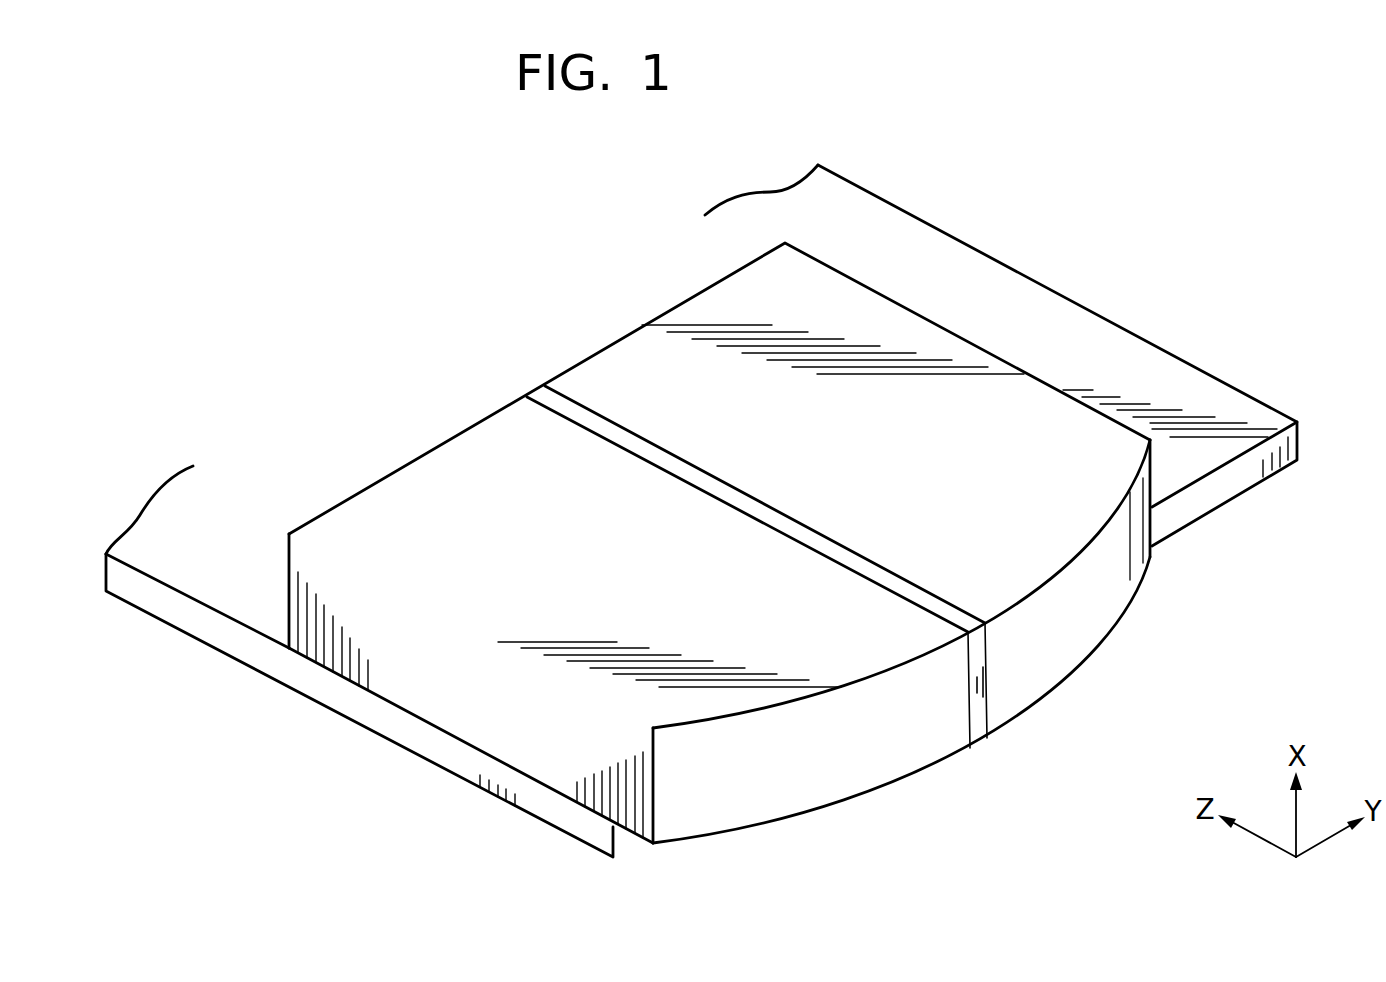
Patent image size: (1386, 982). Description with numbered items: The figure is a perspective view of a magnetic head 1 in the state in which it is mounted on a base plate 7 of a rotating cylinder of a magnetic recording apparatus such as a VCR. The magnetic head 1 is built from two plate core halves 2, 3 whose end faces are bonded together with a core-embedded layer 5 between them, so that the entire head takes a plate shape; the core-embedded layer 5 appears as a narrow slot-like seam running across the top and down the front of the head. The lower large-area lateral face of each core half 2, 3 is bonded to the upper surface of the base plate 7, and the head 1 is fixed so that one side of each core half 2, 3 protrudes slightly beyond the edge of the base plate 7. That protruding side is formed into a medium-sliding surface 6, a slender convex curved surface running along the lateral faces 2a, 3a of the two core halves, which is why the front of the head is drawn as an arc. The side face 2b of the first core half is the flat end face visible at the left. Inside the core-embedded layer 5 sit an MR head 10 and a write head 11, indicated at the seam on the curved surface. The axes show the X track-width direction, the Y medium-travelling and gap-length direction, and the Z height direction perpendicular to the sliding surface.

The magnetic head 1 is at (933, 822).
The core half 2 is at (520, 453).
The lateral face of core half 2a is at (427, 517).
The side surface of first block section 2b is at (460, 693).
The core half 3 is at (733, 313).
The lateral face of core half 3a is at (618, 390).
The core-embedded layer 5 is at (980, 647).
The medium-sliding surface 6 is at (1043, 668).
The base plate 7 is at (994, 295).
The MR head 10 is at (1054, 722).
The write head 11 is at (989, 722).